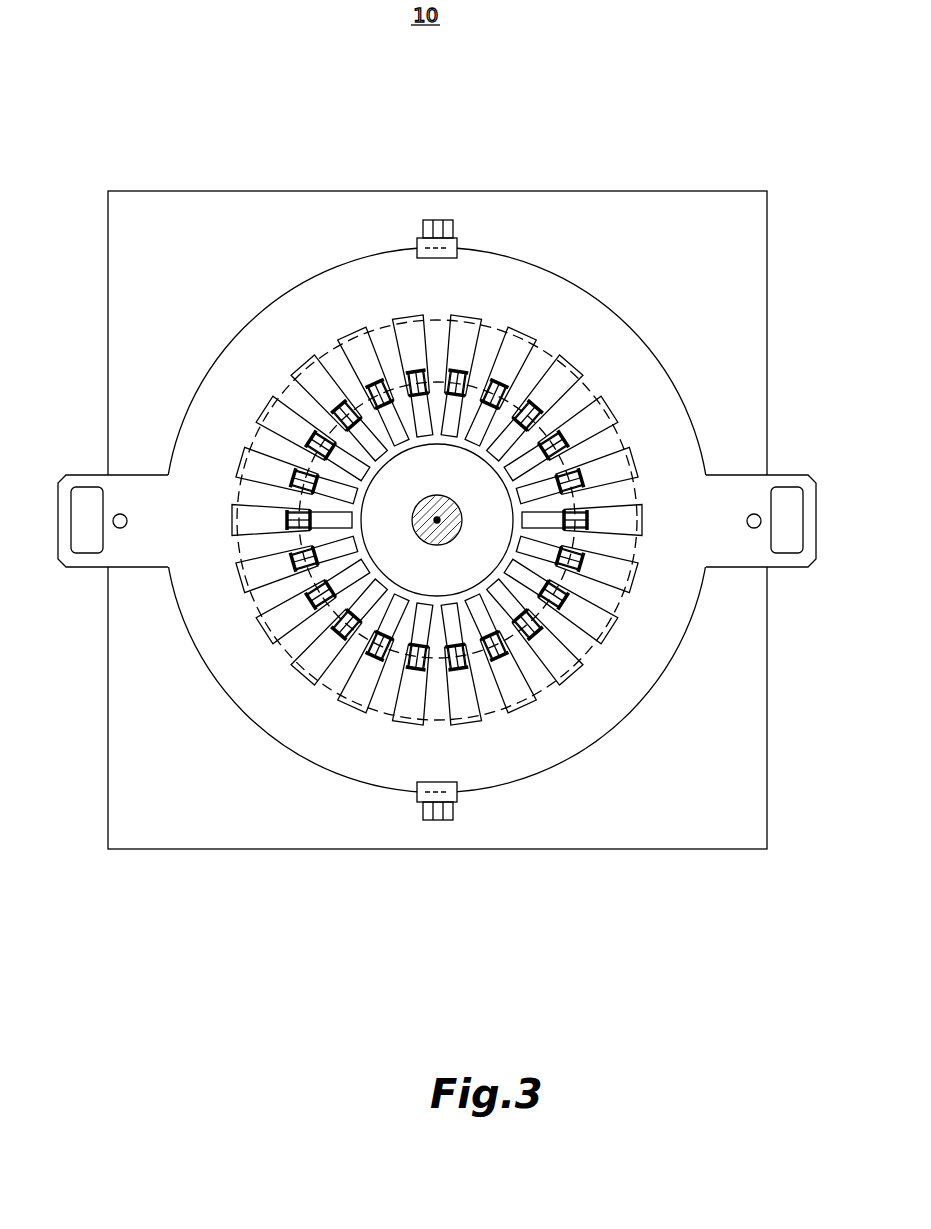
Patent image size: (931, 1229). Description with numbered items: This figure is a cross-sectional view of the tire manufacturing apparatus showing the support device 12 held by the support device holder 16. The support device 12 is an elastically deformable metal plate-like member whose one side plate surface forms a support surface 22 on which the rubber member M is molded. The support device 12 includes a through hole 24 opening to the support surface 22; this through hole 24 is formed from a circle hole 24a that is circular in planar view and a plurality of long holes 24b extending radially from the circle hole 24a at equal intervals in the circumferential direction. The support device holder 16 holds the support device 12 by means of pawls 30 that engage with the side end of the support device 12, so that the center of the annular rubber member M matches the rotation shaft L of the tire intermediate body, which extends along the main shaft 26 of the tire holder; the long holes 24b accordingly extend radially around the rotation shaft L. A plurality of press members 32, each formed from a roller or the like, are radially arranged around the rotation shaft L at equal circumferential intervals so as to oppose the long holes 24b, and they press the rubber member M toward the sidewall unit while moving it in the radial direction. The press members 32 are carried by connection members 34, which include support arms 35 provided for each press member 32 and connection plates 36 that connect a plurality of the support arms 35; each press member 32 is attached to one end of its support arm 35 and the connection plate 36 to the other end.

The support device 12 is at (544, 256).
The support device holder 16 is at (437, 482).
The support surface 22 is at (620, 355).
The through hole 24 is at (412, 635).
The circle hole 24a is at (337, 640).
The long holes 24b is at (360, 707).
The main shaft 26 is at (432, 544).
The pawls 30 is at (436, 240).
The press members 32 is at (355, 470).
The connection members 34 is at (352, 496).
The support arms 35 is at (357, 480).
The connection plates 36 is at (353, 487).
The rotation shaft L is at (440, 516).
The rubber member M is at (378, 327).